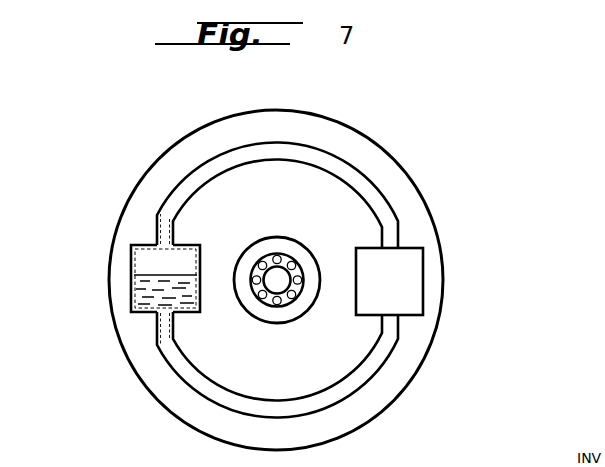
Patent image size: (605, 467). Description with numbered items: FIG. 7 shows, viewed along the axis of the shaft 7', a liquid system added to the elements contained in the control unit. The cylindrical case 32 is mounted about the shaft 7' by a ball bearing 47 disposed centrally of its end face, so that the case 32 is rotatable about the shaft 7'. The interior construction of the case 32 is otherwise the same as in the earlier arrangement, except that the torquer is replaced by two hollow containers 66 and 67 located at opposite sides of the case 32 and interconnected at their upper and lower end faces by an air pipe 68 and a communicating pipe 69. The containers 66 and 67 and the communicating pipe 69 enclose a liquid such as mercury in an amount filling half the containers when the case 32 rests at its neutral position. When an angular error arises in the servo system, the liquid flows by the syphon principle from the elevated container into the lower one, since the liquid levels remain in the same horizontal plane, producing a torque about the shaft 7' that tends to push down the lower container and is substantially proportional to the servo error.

The shaft 7' is at (289, 249).
The case 32 is at (448, 295).
The ball bearing 47 is at (287, 303).
The hollow container 66 is at (417, 272).
The hollow container 67 is at (130, 262).
The air pipe 68 is at (377, 198).
The communicating pipe 69 is at (377, 365).